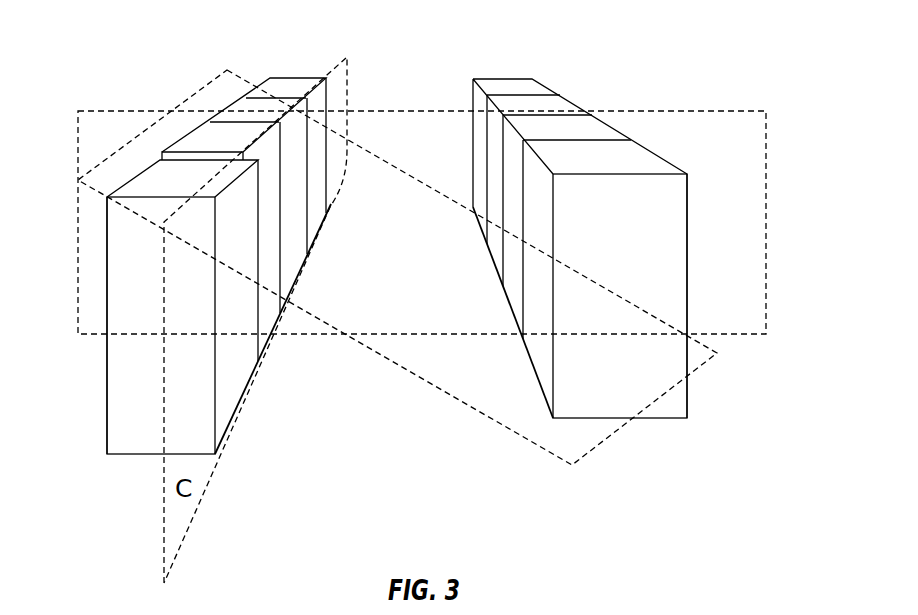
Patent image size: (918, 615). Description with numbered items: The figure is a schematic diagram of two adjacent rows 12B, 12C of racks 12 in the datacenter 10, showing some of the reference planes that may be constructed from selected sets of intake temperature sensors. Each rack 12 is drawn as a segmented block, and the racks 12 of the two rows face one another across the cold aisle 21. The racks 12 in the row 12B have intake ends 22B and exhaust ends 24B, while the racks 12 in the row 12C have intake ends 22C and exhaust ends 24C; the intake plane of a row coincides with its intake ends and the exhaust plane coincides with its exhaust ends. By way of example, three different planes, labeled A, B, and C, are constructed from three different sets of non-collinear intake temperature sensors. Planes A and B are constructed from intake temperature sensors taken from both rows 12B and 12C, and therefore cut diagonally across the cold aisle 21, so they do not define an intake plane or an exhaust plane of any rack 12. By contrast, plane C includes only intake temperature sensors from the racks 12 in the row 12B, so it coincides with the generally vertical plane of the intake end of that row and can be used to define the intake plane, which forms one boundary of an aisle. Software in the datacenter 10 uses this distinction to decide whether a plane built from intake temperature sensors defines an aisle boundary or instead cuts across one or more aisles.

The datacenter 10 is at (790, 40).
The rack 12 is at (274, 93).
The row 12B is at (305, 52).
The row 12C is at (503, 52).
The cold aisle 21 is at (406, 452).
The intake end 22B is at (238, 375).
The intake end 22C is at (545, 353).
The exhaust end 24B is at (105, 405).
The exhaust end 24C is at (687, 390).